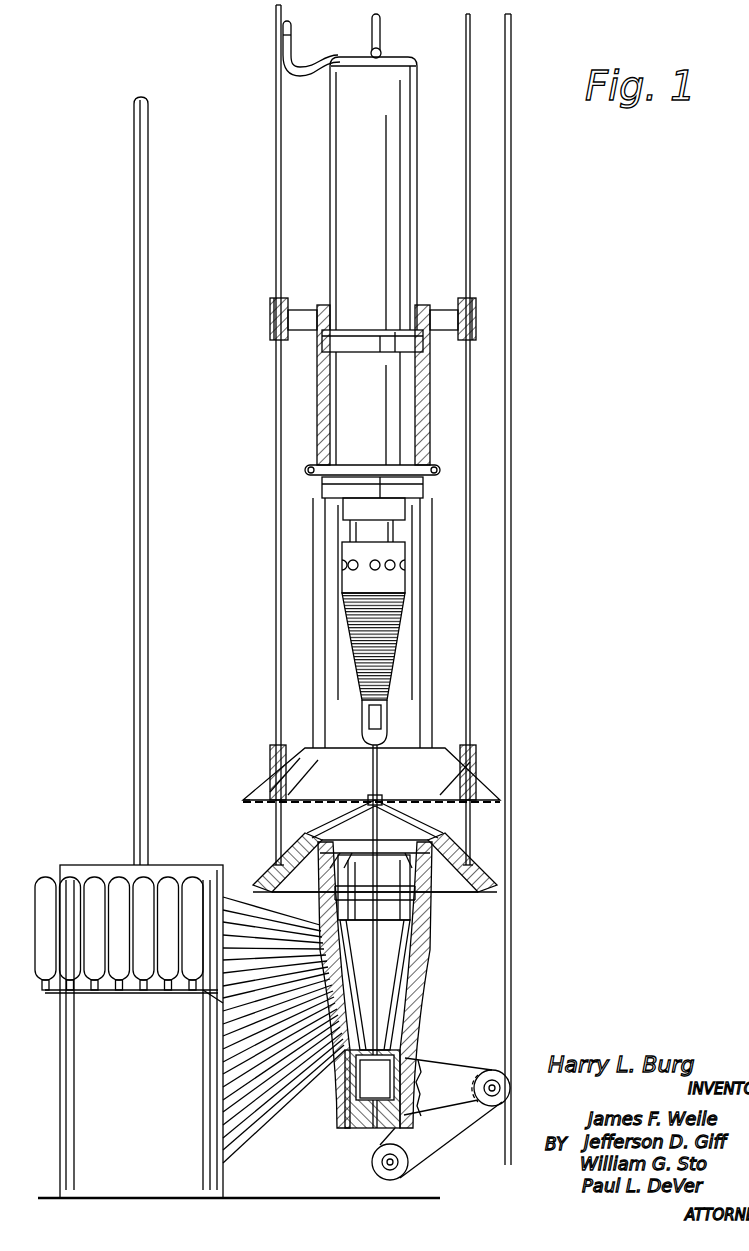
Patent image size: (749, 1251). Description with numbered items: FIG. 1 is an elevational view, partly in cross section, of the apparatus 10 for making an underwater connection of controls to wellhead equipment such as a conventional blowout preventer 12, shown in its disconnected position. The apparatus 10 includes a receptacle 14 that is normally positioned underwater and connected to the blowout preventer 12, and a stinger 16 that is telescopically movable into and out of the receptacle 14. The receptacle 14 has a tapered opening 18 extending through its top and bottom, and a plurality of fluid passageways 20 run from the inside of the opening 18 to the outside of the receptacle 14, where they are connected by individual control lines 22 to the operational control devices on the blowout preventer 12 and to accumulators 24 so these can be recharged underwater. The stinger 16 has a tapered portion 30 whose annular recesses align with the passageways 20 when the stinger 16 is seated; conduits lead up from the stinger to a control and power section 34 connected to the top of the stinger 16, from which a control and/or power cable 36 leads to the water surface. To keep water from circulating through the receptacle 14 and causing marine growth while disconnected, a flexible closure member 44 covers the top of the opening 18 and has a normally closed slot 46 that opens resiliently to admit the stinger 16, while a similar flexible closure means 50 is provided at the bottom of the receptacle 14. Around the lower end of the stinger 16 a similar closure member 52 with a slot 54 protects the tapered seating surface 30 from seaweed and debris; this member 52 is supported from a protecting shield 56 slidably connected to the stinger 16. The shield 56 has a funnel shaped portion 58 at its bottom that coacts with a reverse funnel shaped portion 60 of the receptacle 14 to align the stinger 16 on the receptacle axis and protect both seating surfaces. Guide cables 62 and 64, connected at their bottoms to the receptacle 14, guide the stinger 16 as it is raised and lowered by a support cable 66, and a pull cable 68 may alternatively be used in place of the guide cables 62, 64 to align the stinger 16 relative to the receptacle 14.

The apparatus 10 is at (432, 403).
The blowout preventer 12 is at (134, 1070).
The receptacle 14 is at (414, 1016).
The stinger 16 is at (405, 585).
The opening 18 is at (418, 950).
The fluid passageways 20 is at (345, 984).
The control lines 22 is at (286, 1060).
The accumulators 24 is at (98, 878).
The tapered portion 30 is at (383, 673).
The control and power section 34 is at (417, 278).
The control and/or power cable 36 is at (292, 36).
The flexible closure member 44 is at (470, 822).
The slot 46 is at (395, 826).
The flexible closure means 50 is at (372, 1152).
The closure member 52 is at (318, 798).
The slot 54 is at (378, 800).
The protecting shield 56 is at (432, 532).
The funnel shaped portion 58 is at (488, 784).
The reverse funnel shaped portion 60 is at (486, 880).
The guide cable 62 is at (276, 206).
The guide cable 64 is at (466, 183).
The support cable 66 is at (380, 30).
The pull cable 68 is at (511, 970).